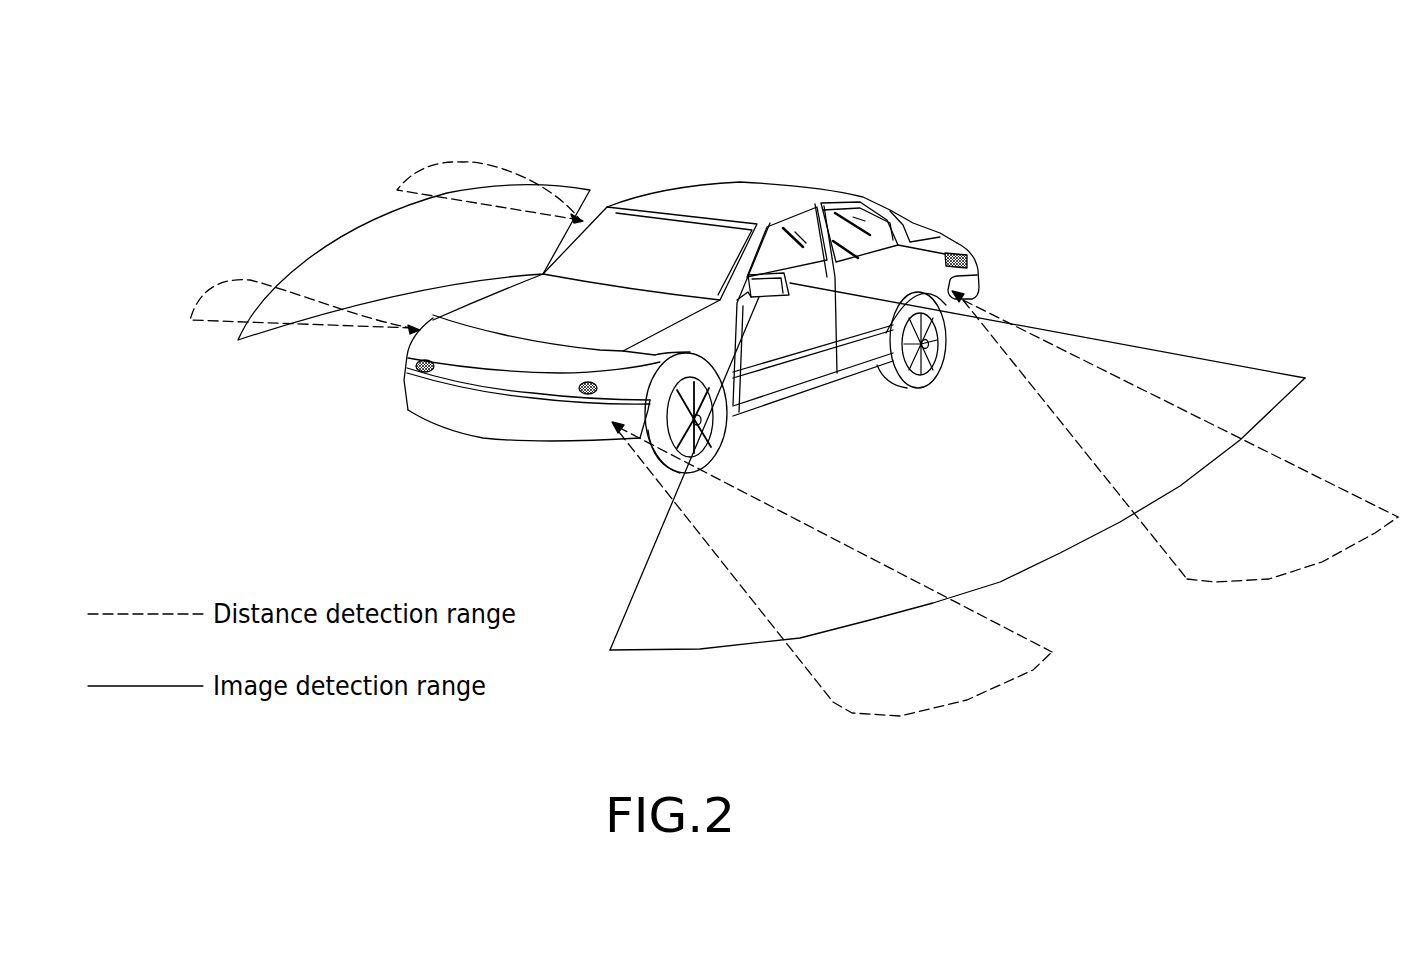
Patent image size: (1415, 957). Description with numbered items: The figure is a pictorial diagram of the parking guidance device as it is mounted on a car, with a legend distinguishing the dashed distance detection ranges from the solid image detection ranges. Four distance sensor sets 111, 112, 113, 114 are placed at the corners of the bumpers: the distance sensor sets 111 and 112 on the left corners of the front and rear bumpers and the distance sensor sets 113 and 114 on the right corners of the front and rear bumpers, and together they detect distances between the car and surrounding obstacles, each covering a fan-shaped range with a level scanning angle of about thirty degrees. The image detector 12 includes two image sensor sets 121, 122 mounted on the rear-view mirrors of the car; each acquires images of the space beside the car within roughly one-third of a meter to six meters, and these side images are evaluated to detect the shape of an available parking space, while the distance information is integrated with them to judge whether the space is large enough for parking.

The image detector 12 is at (830, 191).
The distance sensor set 111 is at (613, 424).
The distance sensor set 112 is at (980, 273).
The distance sensor set 113 is at (420, 331).
The distance sensor set 114 is at (605, 220).
The image sensor set 121 is at (767, 273).
The image sensor set 122 is at (565, 242).